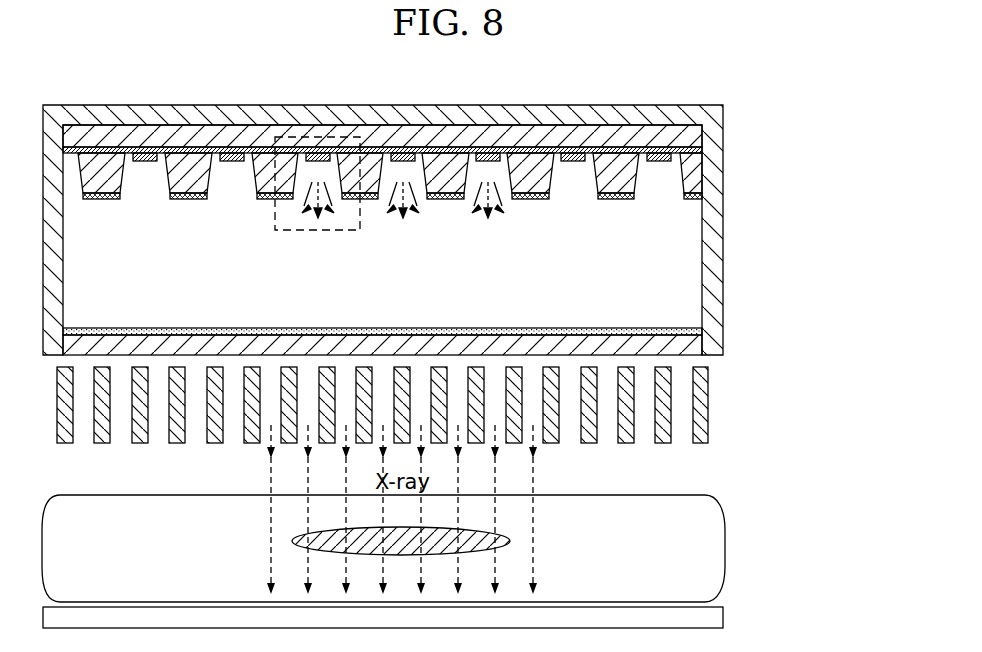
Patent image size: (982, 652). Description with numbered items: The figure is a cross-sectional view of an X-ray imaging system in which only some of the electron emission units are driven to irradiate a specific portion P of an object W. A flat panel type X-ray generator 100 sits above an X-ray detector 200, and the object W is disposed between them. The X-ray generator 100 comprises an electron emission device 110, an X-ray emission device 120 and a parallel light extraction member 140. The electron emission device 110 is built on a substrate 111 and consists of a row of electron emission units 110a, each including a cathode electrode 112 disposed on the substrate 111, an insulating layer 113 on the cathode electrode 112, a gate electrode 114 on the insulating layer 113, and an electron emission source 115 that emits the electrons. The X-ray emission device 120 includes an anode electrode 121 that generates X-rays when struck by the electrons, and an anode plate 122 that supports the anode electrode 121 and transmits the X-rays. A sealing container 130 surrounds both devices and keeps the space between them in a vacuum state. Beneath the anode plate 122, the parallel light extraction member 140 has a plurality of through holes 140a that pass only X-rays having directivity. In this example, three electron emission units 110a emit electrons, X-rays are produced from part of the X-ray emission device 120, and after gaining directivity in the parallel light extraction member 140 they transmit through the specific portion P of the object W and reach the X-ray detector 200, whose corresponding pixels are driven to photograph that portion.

The flat panel type X-ray generator 100 is at (832, 168).
The electron emission device 110 is at (773, 115).
The electron emission unit 110a is at (322, 143).
The substrate 111 is at (693, 140).
The cathode electrode 112 is at (707, 151).
The insulating layer 113 is at (628, 175).
The gate electrode 114 is at (620, 198).
The electron emission source 115 is at (677, 168).
The X-ray emission device 120 is at (775, 316).
The anode electrode 121 is at (707, 330).
The anode plate 122 is at (707, 350).
The sealing container 130 is at (712, 265).
The parallel light extraction member 140 is at (442, 407).
The through hole 140a is at (697, 418).
The X-ray detector 200 is at (723, 617).
The specific portion P is at (510, 541).
The object W is at (717, 552).